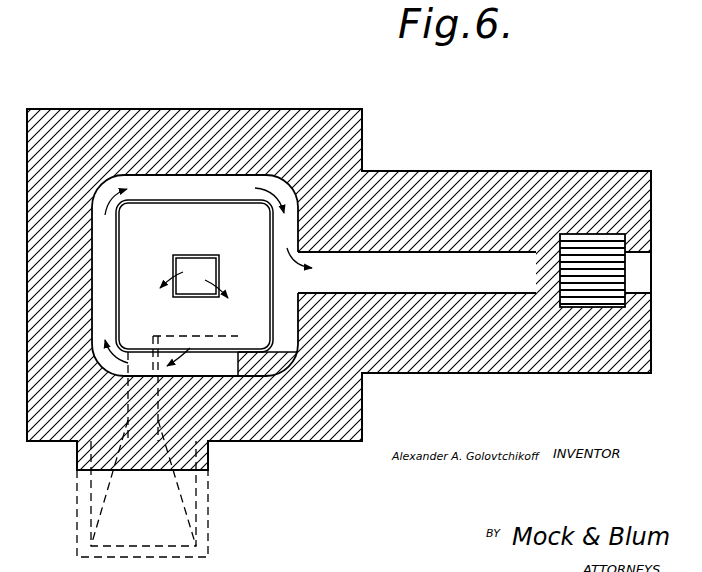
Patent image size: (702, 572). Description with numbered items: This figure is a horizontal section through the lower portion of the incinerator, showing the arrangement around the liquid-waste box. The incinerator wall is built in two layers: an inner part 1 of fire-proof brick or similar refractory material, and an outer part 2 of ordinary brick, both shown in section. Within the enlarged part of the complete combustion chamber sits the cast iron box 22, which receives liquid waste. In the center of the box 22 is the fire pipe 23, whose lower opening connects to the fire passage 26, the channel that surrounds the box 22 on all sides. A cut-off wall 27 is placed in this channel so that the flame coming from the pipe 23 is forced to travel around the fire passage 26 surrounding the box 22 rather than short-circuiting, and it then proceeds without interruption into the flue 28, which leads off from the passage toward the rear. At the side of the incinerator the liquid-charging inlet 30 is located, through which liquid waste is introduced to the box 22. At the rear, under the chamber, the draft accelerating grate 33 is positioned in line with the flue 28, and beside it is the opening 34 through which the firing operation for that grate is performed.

The inner part 1 is at (297, 187).
The outer part 2 is at (339, 289).
The cast iron box 22 is at (194, 276).
The fire pipe 23 is at (203, 262).
The fire passage 26 is at (202, 273).
The cut-off wall 27 is at (267, 364).
The flue 28 is at (417, 272).
The liquid-charging inlet 30 is at (170, 516).
The draft accelerating grate 33 is at (560, 283).
The opening 34 is at (653, 273).